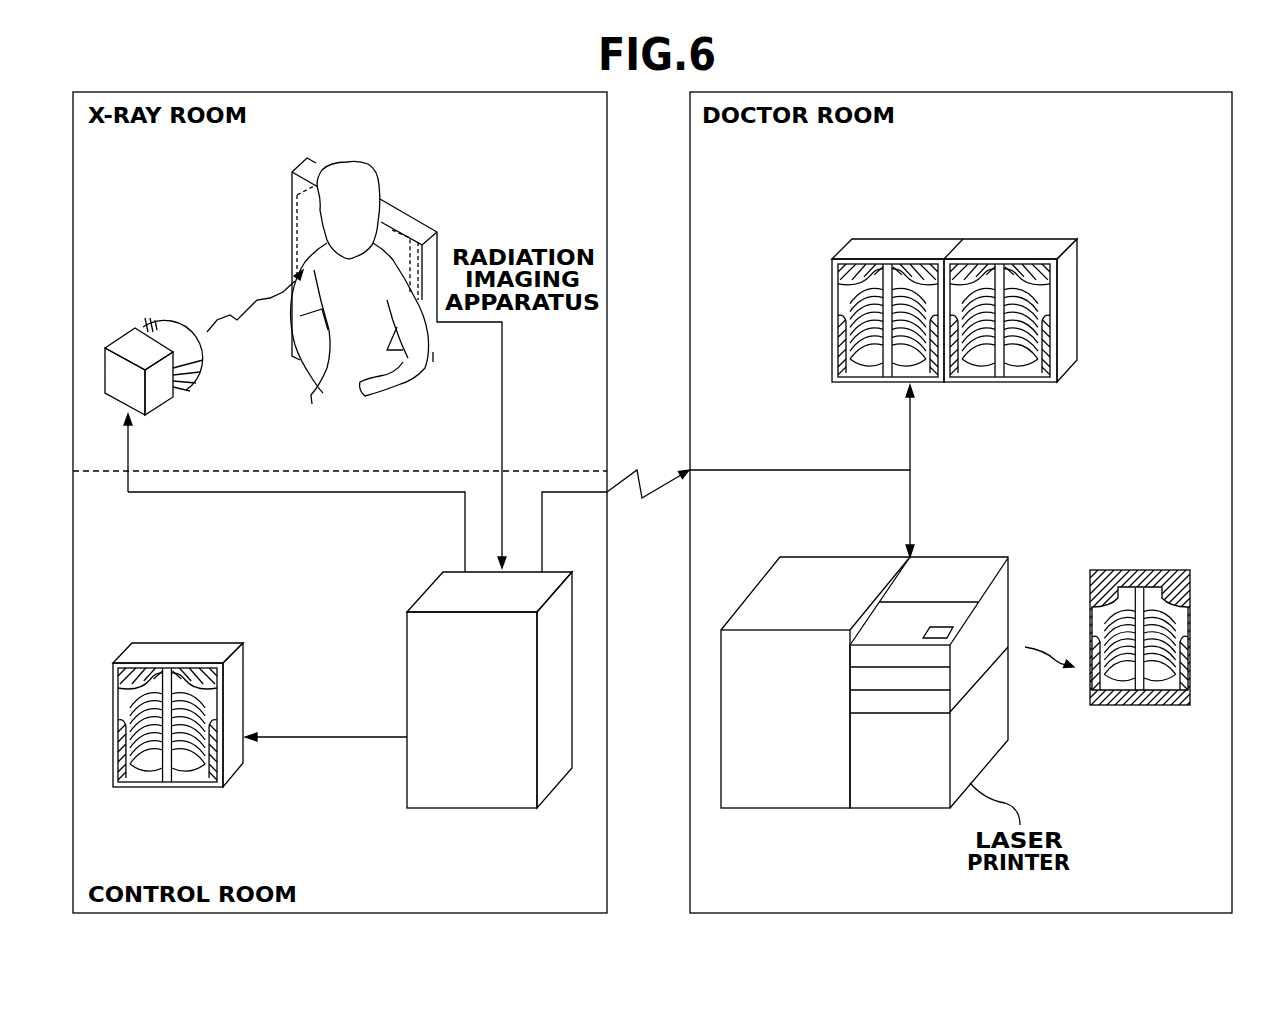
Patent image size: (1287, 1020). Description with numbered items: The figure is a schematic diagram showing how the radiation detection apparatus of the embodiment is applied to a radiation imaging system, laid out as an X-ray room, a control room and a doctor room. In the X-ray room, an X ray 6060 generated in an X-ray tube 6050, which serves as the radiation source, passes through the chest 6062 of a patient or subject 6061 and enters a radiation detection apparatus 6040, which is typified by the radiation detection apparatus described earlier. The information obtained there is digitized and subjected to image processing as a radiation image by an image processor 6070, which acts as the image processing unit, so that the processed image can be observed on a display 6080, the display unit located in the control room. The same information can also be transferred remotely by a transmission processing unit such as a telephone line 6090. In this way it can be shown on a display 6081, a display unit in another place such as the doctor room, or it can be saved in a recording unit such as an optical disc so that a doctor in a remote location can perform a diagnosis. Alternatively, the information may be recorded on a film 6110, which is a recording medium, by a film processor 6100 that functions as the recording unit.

The radiation detection apparatus 6040 is at (408, 236).
The X-ray tube 6050 is at (122, 340).
The X ray 6060 is at (257, 300).
The patient or subject 6061 is at (352, 158).
The chest 6062 is at (348, 358).
The image processor 6070 is at (482, 809).
The display 6080 is at (176, 658).
The display 6081 is at (893, 243).
The telephone line 6090 is at (650, 468).
The film processor 6100 is at (797, 809).
The film 6110 is at (1113, 567).